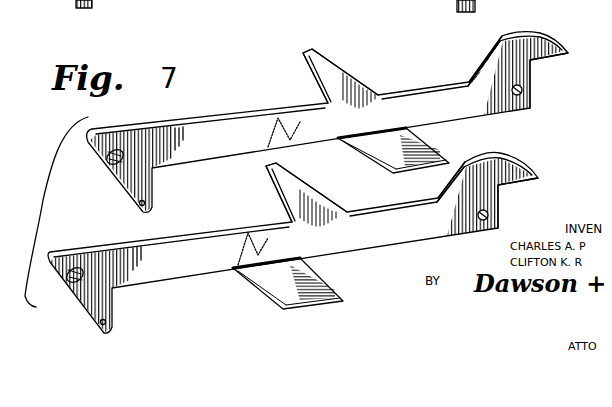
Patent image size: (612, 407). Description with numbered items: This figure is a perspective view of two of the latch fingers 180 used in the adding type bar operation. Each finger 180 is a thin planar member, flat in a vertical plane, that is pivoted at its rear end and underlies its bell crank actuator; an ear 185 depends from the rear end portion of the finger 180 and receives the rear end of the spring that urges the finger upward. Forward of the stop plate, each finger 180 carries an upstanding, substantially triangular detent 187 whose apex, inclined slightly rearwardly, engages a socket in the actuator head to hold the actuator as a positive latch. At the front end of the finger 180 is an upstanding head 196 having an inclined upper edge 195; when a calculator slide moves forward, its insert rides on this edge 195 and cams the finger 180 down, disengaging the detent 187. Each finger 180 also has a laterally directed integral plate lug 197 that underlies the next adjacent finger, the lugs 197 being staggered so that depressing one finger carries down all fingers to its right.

The latch finger 180 is at (235, 123).
The ear 185 is at (131, 179).
The detent 187 is at (319, 63).
The inclined upper edge 195 is at (486, 58).
The upstanding head 196 is at (538, 36).
The plate lug 197 is at (424, 158).